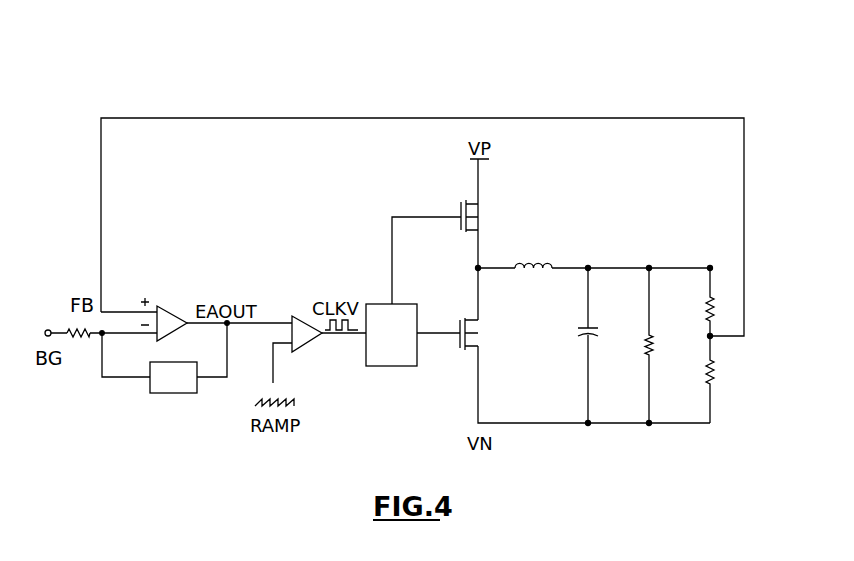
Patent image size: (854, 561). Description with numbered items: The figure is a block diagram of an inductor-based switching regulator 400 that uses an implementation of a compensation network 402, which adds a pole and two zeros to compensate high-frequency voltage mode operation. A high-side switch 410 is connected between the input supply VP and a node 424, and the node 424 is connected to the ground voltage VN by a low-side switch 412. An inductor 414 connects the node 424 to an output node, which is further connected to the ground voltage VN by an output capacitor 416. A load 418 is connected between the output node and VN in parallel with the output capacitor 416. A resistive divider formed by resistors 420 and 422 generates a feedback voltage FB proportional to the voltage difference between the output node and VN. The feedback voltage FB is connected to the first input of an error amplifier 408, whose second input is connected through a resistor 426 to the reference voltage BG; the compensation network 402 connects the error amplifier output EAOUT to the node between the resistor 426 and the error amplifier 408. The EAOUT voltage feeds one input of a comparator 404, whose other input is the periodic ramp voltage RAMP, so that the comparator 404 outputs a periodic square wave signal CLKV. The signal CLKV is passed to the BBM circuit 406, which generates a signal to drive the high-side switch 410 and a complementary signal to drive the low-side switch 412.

The inductor-based switching regulator 400 is at (140, 87).
The compensation network 402 is at (190, 389).
The comparator 404 is at (305, 346).
The BBM circuit 406 is at (376, 360).
The error amplifier 408 is at (165, 307).
The high-side switch 410 is at (482, 212).
The low-side switch 412 is at (480, 342).
The inductor 414 is at (536, 265).
The output capacitor 416 is at (576, 332).
The load 418 is at (645, 350).
The resistor 420 is at (705, 311).
The resistor 422 is at (715, 372).
The node 424 is at (478, 268).
The resistor 426 is at (80, 338).